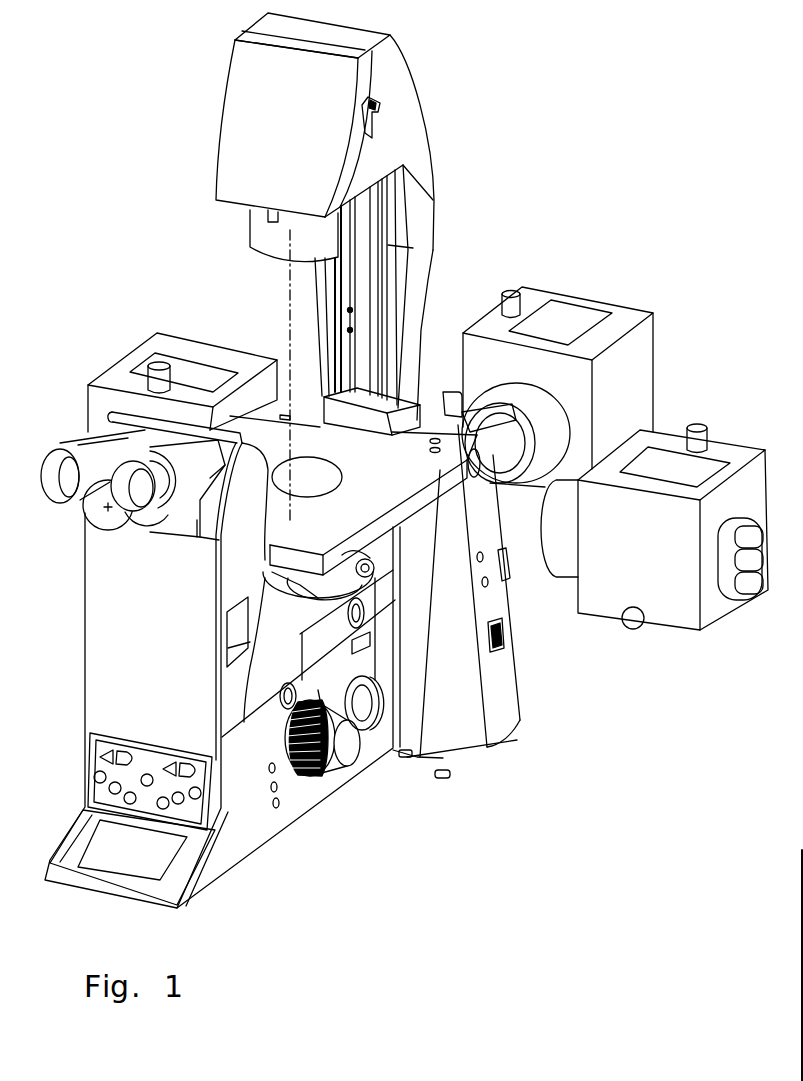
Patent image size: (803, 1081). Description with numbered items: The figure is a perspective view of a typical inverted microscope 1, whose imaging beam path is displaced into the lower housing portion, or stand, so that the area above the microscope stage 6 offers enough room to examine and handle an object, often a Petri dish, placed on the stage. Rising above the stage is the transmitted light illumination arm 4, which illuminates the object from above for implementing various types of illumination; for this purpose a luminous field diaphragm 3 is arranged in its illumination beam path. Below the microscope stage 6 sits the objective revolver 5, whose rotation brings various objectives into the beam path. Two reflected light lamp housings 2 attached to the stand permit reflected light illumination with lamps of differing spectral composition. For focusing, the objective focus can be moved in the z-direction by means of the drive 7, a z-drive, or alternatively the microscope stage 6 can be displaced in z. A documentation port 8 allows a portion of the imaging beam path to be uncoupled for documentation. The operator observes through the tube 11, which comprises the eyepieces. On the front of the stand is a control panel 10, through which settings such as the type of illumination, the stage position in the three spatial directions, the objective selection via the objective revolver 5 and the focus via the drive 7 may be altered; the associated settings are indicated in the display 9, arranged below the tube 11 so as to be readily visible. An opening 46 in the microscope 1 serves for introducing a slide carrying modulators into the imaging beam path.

The inverted microscope 1 is at (198, 297).
The reflected light lamp housings 2 is at (733, 452).
The luminous field diaphragm 3 is at (258, 215).
The transmitted light illumination arm 4 is at (413, 343).
The objective revolver 5 is at (400, 620).
The microscope stage 6 is at (237, 427).
The drive 7 is at (337, 753).
The documentation port 8 is at (378, 695).
The display 9 is at (153, 860).
The control panel 10 is at (110, 768).
The tube 11 is at (90, 553).
The opening 46 is at (227, 647).